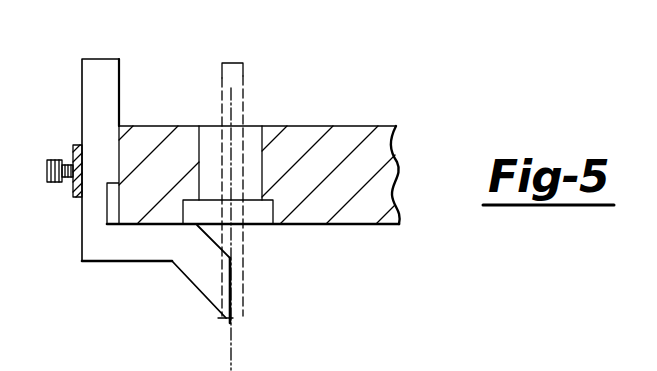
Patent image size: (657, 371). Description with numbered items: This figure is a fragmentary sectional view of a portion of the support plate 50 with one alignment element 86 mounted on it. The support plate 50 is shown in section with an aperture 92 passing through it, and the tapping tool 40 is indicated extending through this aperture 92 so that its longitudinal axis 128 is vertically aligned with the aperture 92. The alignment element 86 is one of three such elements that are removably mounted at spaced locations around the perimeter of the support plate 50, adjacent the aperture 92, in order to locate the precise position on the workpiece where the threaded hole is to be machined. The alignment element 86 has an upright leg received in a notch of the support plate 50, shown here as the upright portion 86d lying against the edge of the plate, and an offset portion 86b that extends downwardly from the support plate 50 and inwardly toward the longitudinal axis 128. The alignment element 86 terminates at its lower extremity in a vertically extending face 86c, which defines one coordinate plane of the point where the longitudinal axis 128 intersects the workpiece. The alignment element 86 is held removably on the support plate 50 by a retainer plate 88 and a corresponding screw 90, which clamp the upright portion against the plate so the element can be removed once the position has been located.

The tapping tool 40 is at (243, 67).
The support plate 50 is at (346, 140).
The alignment element 86 is at (103, 250).
The offset portion 86b is at (188, 267).
The vertically extending face 86c is at (232, 287).
The bracket upright plate 86d is at (113, 92).
The retainer plate 88 is at (77, 141).
The screw 90 is at (46, 172).
The aperture 92 is at (253, 136).
The longitudinal axis 128 is at (229, 359).